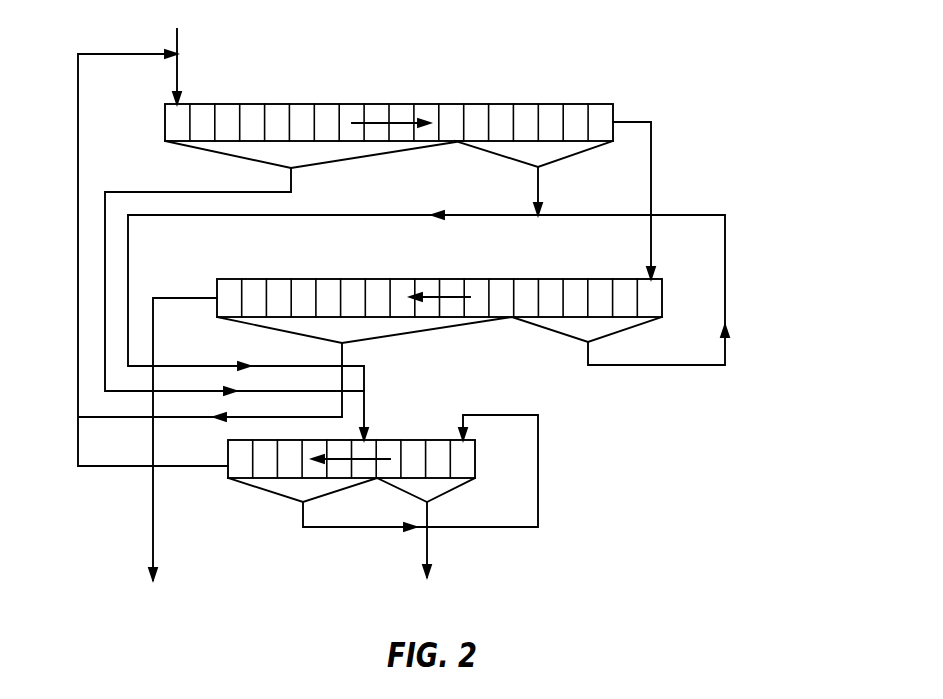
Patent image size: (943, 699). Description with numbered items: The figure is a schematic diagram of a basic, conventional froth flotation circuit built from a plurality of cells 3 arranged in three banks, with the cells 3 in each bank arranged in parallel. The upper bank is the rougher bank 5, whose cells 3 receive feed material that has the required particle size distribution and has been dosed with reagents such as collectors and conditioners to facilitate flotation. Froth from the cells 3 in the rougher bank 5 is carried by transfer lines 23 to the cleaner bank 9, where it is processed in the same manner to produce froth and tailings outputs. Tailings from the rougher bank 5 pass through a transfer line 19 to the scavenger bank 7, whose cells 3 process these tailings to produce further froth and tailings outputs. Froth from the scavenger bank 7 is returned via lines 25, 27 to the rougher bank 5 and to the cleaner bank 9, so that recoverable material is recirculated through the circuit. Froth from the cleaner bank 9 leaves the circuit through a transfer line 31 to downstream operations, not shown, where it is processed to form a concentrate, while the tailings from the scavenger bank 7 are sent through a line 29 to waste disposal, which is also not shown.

The cells 3 is at (550, 110).
The rougher bank 5 is at (640, 75).
The scavenger bank 7 is at (737, 218).
The cleaner bank 9 is at (562, 495).
The transfer line 19 is at (651, 173).
The transfer lines 23 is at (292, 172).
The line 25 is at (102, 417).
The line 27 is at (672, 366).
The line 29 is at (153, 527).
The transfer line 31 is at (468, 572).